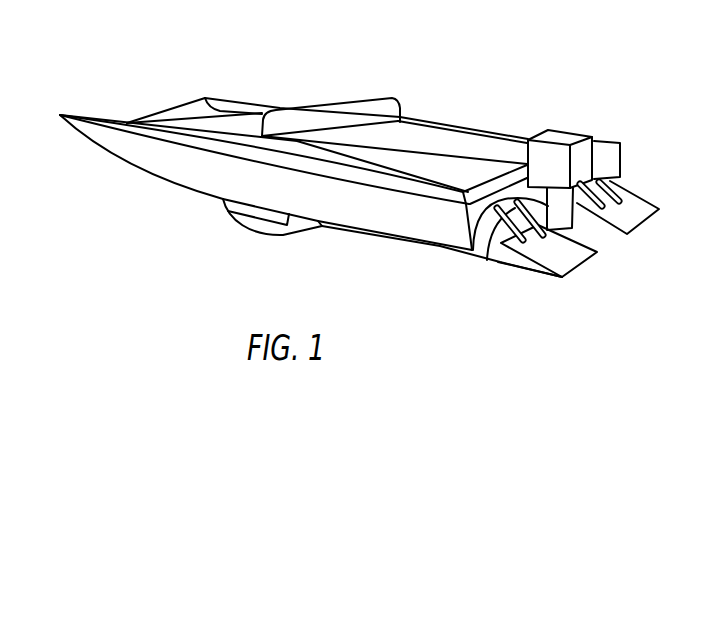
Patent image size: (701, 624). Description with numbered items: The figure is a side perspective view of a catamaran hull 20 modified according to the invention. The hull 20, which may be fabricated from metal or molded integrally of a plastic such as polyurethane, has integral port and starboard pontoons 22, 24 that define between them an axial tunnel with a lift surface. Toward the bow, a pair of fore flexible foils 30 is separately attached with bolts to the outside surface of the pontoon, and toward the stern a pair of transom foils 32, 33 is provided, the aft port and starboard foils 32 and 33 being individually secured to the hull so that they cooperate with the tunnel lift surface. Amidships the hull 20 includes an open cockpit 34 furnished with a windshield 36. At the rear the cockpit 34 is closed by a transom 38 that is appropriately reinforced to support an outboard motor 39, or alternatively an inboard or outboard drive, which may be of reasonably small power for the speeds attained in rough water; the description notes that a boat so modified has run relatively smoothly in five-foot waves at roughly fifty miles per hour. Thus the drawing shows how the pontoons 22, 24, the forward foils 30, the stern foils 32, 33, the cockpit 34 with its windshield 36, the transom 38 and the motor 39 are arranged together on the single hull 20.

The catamaran hull 20 is at (454, 76).
The port pontoon 22 is at (484, 252).
The starboard pontoon 24 is at (612, 168).
The fore flexible foil pair 30 is at (313, 232).
The stern foil 32 is at (555, 255).
The stern foil 33 is at (630, 210).
The open cockpit 34 is at (423, 143).
The windshield 36 is at (342, 114).
The transom 38 is at (471, 230).
The outboard motor 39 is at (588, 103).